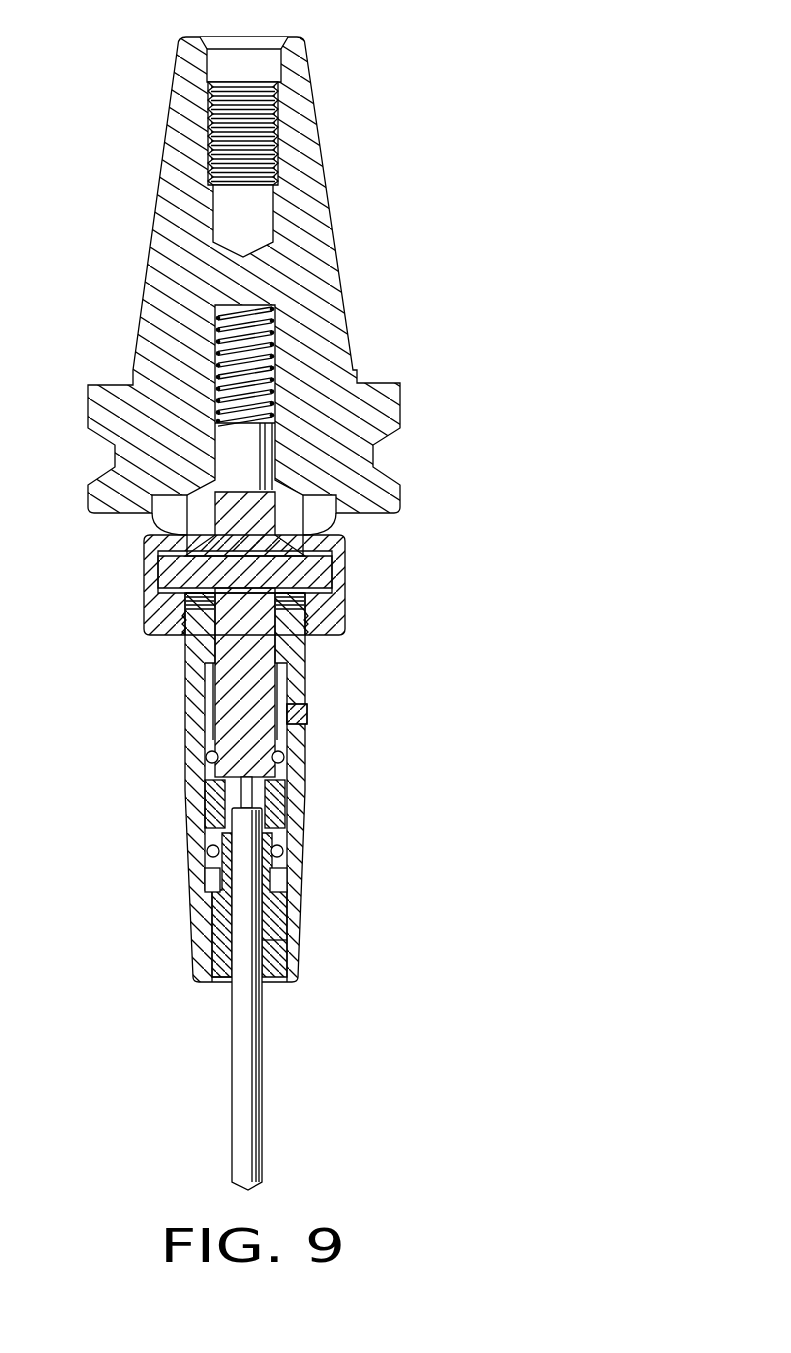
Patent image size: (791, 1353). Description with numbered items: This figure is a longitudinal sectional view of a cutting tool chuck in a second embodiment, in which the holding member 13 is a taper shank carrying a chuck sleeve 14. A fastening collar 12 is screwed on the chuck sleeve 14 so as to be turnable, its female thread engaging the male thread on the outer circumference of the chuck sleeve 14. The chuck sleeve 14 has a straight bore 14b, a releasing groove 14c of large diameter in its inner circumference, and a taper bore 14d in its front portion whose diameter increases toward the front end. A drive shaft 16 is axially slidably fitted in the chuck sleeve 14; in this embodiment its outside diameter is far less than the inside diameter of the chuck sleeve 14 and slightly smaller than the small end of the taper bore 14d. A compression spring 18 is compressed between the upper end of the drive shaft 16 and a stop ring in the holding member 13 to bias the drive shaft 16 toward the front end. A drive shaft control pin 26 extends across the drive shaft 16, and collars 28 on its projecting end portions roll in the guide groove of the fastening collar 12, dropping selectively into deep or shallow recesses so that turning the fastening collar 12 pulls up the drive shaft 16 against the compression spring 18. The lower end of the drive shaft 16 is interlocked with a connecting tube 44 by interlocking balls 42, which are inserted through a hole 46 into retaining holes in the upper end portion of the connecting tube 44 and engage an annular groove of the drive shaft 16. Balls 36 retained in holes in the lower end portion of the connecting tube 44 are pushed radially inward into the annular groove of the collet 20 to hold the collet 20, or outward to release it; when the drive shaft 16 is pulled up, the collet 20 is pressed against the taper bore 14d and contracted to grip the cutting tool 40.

The holding member 13 is at (340, 238).
The compression spring 18 is at (217, 323).
The drive shaft 16 is at (262, 690).
The fastening collar 12 is at (345, 552).
The drive shaft control pin 26 is at (160, 576).
The chuck sleeve 14 is at (187, 712).
The collars 28 is at (320, 603).
The hole 46 is at (295, 712).
The interlocking balls 42 is at (205, 757).
The connecting tube 44 is at (217, 797).
The straight bore 14b is at (214, 836).
The releasing groove 14c is at (305, 887).
The taper bore 14d is at (270, 941).
The balls 36 is at (208, 856).
The collet 20 is at (222, 985).
The cutting tool 40 is at (263, 1113).